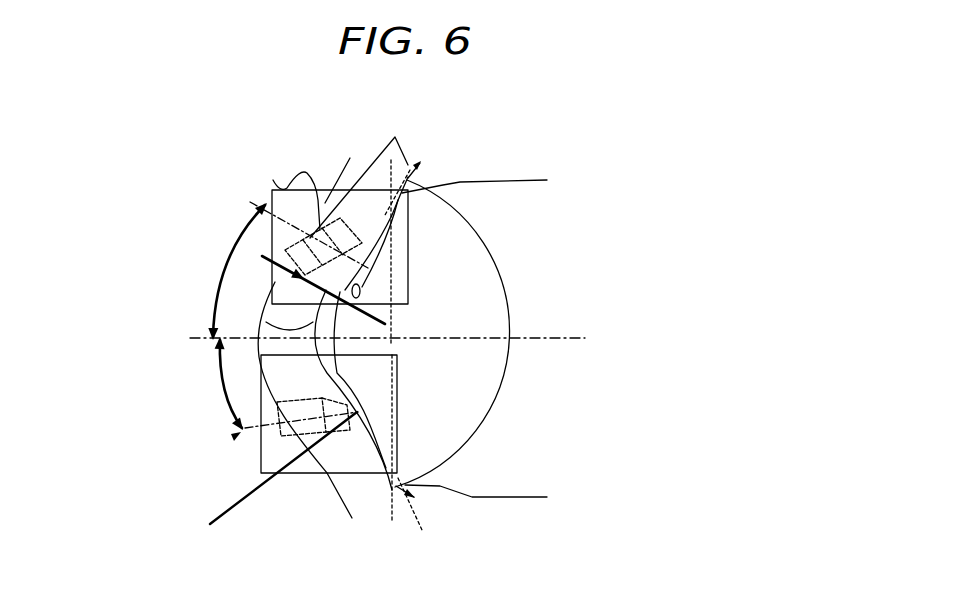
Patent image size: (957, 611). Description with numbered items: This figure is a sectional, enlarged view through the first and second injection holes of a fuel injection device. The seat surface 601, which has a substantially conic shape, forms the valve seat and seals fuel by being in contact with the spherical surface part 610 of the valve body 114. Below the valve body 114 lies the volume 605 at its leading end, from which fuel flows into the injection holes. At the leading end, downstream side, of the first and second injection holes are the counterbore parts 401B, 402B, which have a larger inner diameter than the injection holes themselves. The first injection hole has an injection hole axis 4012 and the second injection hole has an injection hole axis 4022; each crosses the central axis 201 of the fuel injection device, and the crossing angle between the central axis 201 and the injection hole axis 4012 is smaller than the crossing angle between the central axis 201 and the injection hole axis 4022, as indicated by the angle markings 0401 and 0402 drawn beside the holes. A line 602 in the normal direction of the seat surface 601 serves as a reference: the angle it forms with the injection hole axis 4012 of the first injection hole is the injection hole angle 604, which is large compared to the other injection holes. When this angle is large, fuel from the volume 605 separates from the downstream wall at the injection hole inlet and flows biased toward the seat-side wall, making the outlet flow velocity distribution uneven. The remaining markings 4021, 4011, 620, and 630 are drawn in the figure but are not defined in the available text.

The normal line of lens 4021 is at (408, 163).
The injection hole axis of the second injection hole 4022 is at (253, 202).
The counterbore part 402B is at (298, 188).
The rotation angle of second mirror 0402 is at (247, 213).
The incident light ray 620 is at (273, 282).
The volume at the leading end of the valve body 605 is at (260, 318).
The rotation angle of first mirror 0401 is at (220, 367).
The counterbore part 401B is at (247, 413).
The injection hole axis of the first injection hole 4012 is at (240, 433).
The injection hole angle 604 is at (261, 453).
The line in a normal direction of the seat surface 602 is at (210, 524).
The lower normal line 4011 is at (352, 458).
The upper beam edge 630 is at (470, 225).
The spherical surface part 610 is at (380, 238).
The valve body 114 is at (523, 282).
The central axis 201 is at (585, 340).
The seat surface 601 is at (367, 442).